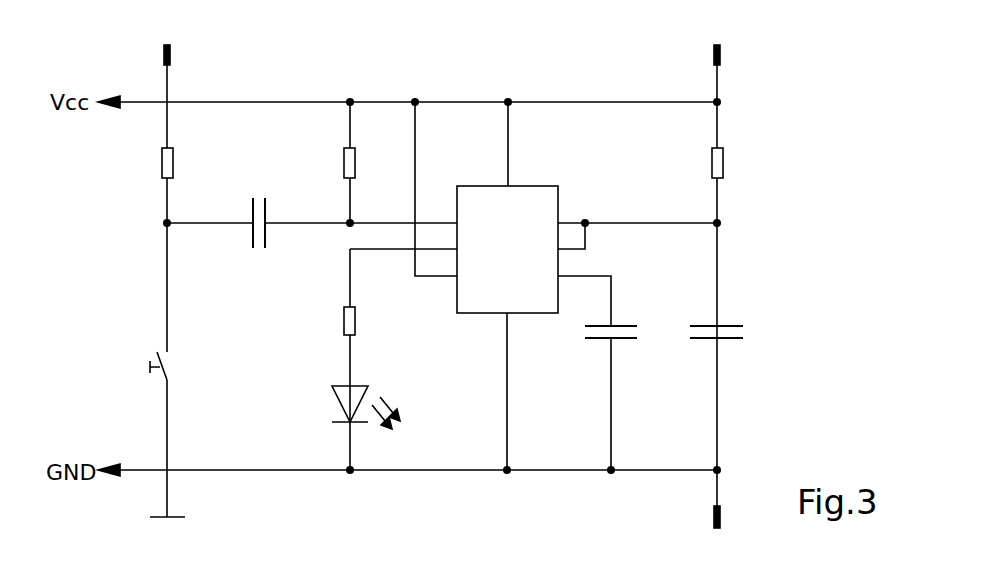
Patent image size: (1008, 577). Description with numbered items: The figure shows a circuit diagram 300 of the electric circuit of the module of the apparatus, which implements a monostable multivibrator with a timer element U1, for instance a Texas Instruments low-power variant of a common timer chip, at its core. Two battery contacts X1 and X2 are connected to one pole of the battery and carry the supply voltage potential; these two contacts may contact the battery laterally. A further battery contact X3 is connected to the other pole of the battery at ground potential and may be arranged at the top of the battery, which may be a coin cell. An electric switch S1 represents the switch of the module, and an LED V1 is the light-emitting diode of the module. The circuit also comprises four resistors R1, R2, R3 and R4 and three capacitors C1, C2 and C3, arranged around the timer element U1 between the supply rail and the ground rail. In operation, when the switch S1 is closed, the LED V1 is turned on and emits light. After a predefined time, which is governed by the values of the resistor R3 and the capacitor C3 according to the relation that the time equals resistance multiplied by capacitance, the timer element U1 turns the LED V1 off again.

The circuit diagram 300 is at (785, 85).
The battery contact X1 is at (184, 55).
The battery contact X2 is at (734, 55).
The battery contact X3 is at (734, 519).
The resistor R1 is at (184, 163).
The resistor R2 is at (367, 163).
The resistor R3 is at (734, 163).
The resistor R4 is at (367, 321).
The capacitor C1 is at (278, 225).
The capacitor C2 is at (617, 318).
The capacitor C3 is at (723, 318).
The timer element U1 is at (507, 235).
The electric switch S1 is at (179, 366).
The LED V1 is at (377, 400).